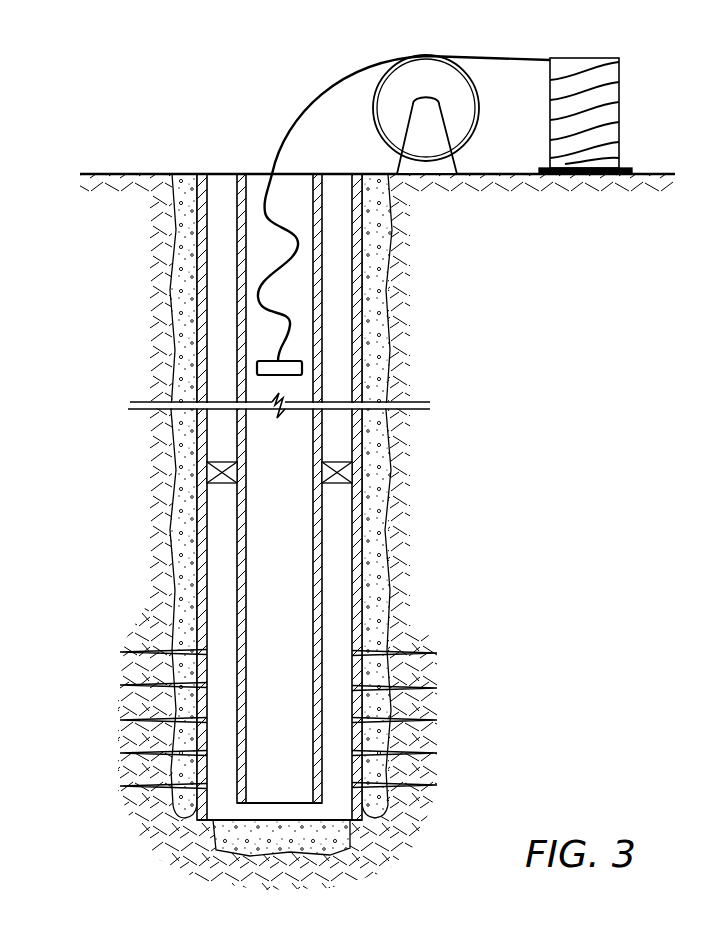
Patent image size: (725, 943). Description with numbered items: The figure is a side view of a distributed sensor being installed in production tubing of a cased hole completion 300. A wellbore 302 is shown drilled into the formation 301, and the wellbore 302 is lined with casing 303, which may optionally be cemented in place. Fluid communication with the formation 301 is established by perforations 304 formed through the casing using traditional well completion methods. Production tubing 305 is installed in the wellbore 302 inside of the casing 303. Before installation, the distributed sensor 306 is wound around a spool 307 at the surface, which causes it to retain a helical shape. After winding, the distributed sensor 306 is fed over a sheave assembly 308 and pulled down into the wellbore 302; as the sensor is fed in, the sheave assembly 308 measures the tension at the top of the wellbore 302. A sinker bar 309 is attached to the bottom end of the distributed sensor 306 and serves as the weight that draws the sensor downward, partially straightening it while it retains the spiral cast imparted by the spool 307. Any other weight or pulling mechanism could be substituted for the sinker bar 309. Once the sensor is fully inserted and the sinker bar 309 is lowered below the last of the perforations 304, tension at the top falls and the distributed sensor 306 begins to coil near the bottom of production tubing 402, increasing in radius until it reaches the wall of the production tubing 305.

The cased hole completion 300 is at (154, 91).
The formation 301 is at (127, 596).
The wellbore 302 is at (430, 537).
The casing 303 is at (357, 327).
The perforations 304 is at (400, 711).
The production tubing 305 is at (241, 174).
The distributed sensor 306 is at (328, 90).
The spool 307 is at (594, 66).
The sheave assembly 308 is at (424, 75).
The sinker bar 309 is at (302, 366).
The bottom of production tubing 402 is at (307, 801).